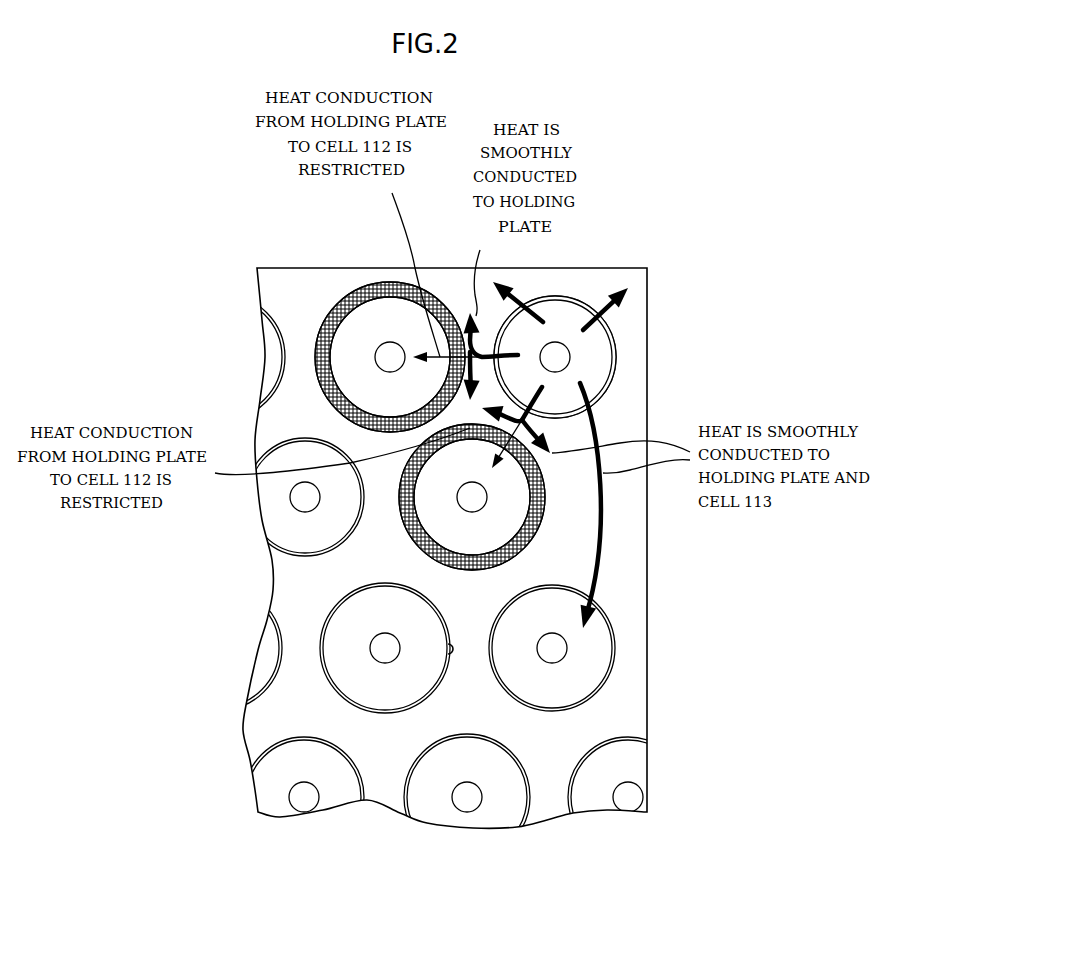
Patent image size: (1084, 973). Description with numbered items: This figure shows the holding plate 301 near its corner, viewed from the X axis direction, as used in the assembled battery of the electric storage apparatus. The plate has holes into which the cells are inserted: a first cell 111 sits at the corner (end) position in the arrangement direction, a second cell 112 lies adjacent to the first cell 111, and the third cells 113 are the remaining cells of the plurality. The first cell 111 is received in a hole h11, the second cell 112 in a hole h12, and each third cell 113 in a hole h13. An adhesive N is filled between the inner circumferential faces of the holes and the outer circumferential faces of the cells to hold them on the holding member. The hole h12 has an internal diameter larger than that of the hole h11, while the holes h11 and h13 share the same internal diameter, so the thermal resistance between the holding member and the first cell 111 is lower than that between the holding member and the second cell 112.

The holding plate 301 is at (592, 268).
The first cell 111 is at (600, 368).
The second cell 112 is at (365, 315).
The third cell 113 is at (275, 362).
The hole h11 is at (615, 335).
The hole h12 is at (267, 313).
The hole h13 is at (446, 651).
The adhesive N is at (318, 337).